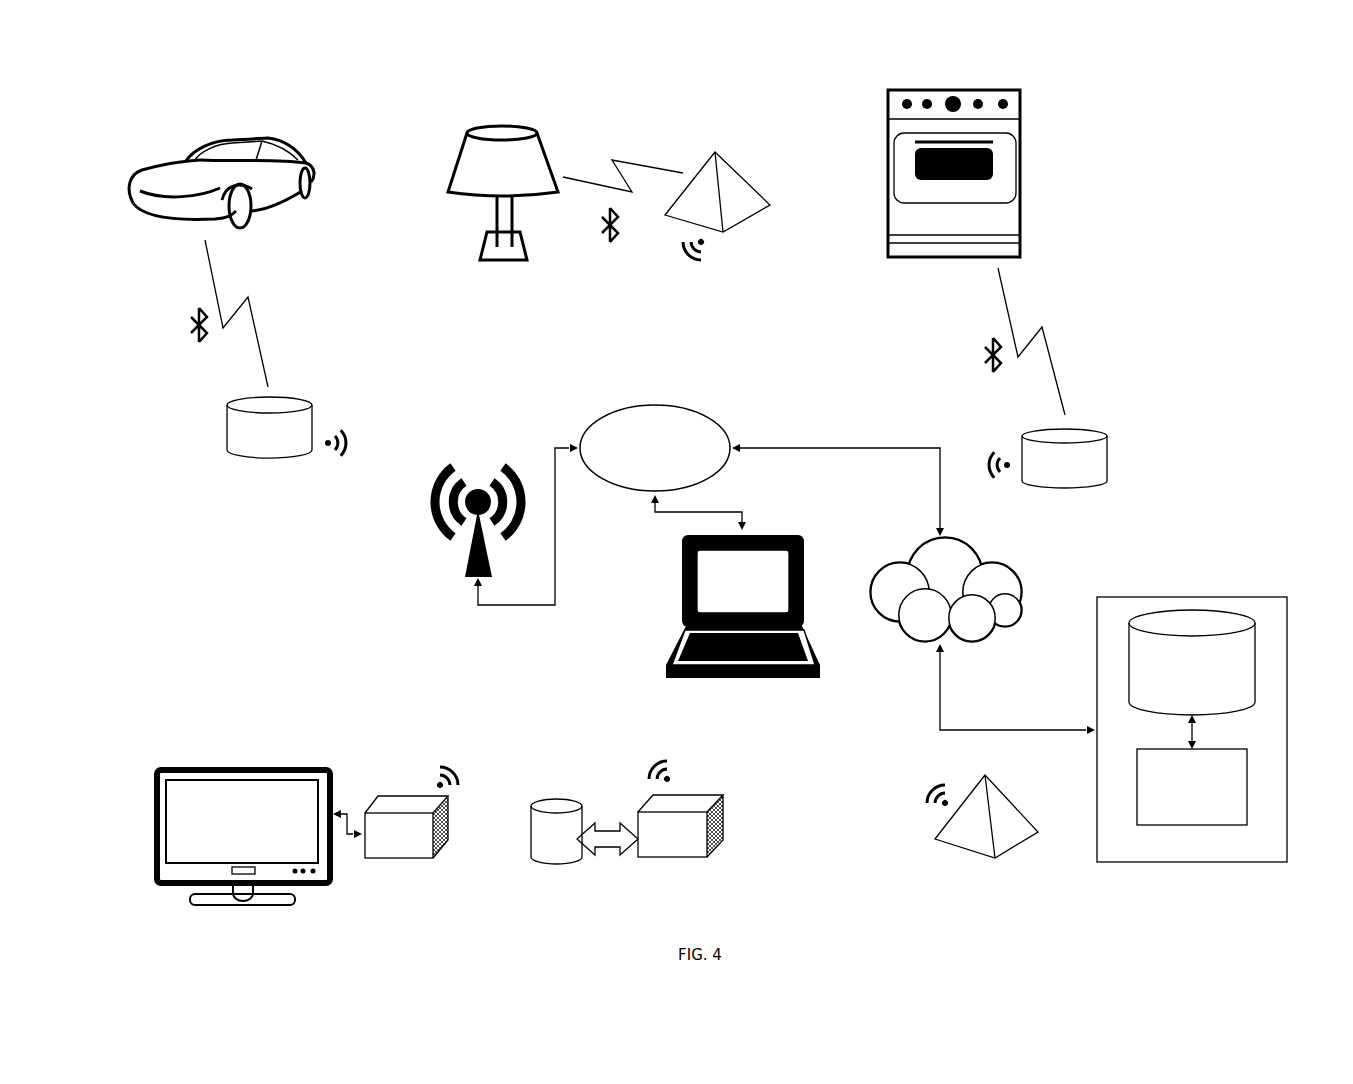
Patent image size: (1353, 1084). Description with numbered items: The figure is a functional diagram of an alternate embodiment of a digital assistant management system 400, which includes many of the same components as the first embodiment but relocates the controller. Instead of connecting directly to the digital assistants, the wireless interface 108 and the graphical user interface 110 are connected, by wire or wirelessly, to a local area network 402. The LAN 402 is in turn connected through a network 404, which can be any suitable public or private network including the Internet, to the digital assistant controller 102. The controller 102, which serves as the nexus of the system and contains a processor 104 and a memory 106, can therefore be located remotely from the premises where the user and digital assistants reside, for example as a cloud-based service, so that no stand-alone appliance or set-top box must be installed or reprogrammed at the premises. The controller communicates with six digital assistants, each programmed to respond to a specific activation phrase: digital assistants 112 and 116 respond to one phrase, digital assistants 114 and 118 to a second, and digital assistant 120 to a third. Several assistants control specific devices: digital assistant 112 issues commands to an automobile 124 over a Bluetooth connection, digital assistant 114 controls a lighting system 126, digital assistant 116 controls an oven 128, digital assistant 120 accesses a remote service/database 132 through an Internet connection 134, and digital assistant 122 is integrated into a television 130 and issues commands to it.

The system 400 is at (147, 98).
The automobile 124 is at (270, 205).
The lighting system 126 is at (438, 177).
The digital assistant 114 is at (717, 208).
The oven 128 is at (1023, 207).
The digital assistant 112 is at (286, 427).
The digital assistant 116 is at (1048, 458).
The local area network 402 is at (624, 415).
The wireless interface 108 is at (460, 560).
The graphical user interface 110 is at (768, 683).
The network 404 is at (900, 577).
The digital assistant controller 102 is at (1192, 740).
The memory 106 is at (1192, 662).
The processor 104 is at (1192, 787).
The television 130 is at (227, 770).
The digital assistant 122 is at (413, 810).
The remote service/database 132 is at (556, 831).
The Internet connection 134 is at (607, 830).
The digital assistant 120 is at (680, 807).
The digital assistant 118 is at (980, 816).